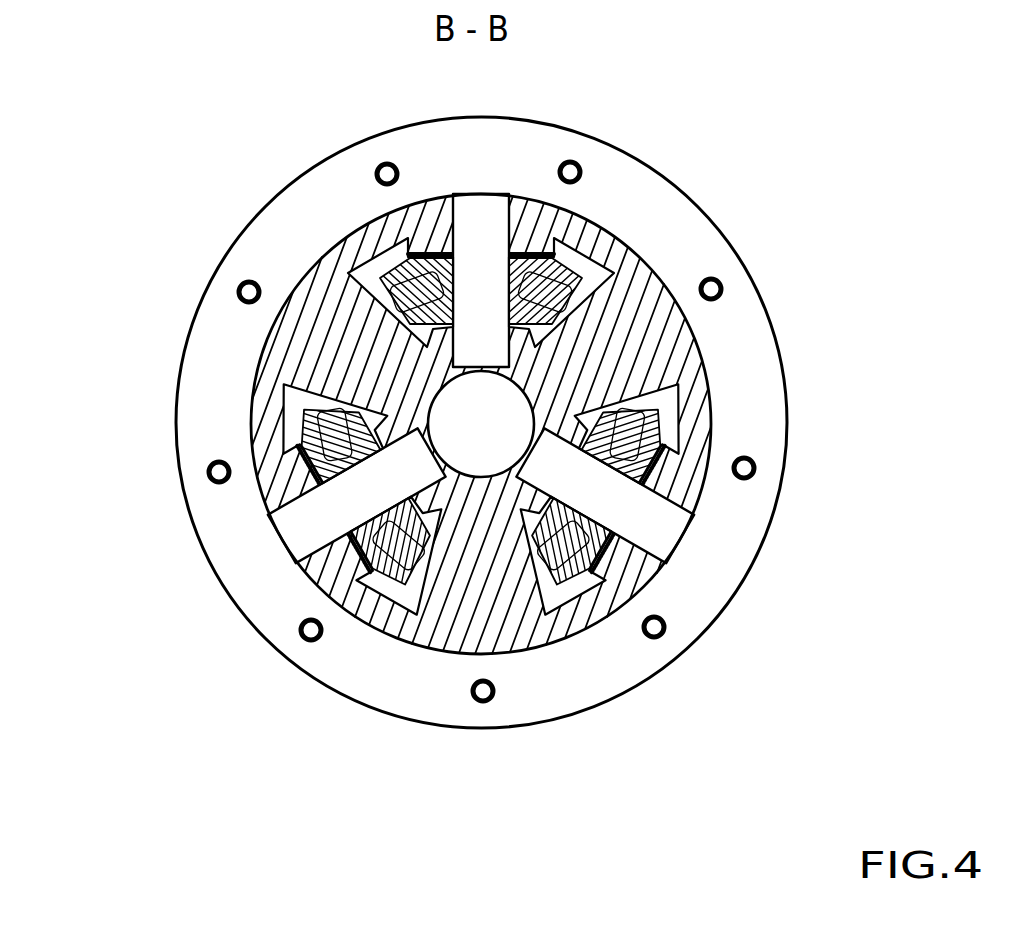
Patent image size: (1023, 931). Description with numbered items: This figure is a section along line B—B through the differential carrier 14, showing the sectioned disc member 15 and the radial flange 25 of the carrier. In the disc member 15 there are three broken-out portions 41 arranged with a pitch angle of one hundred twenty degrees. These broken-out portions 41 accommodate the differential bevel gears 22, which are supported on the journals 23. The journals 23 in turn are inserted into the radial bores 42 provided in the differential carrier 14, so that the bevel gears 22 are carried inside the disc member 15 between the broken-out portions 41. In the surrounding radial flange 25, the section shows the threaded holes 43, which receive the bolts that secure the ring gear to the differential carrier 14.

The differential carrier 14 is at (797, 308).
The disc member 15 is at (697, 400).
The differential bevel gears 22 is at (383, 252).
The journals 23 is at (473, 240).
The radial flange 25 is at (777, 412).
The broken-out portions 41 is at (455, 350).
The radial bores 42 is at (553, 240).
The threaded holes 43 is at (722, 282).